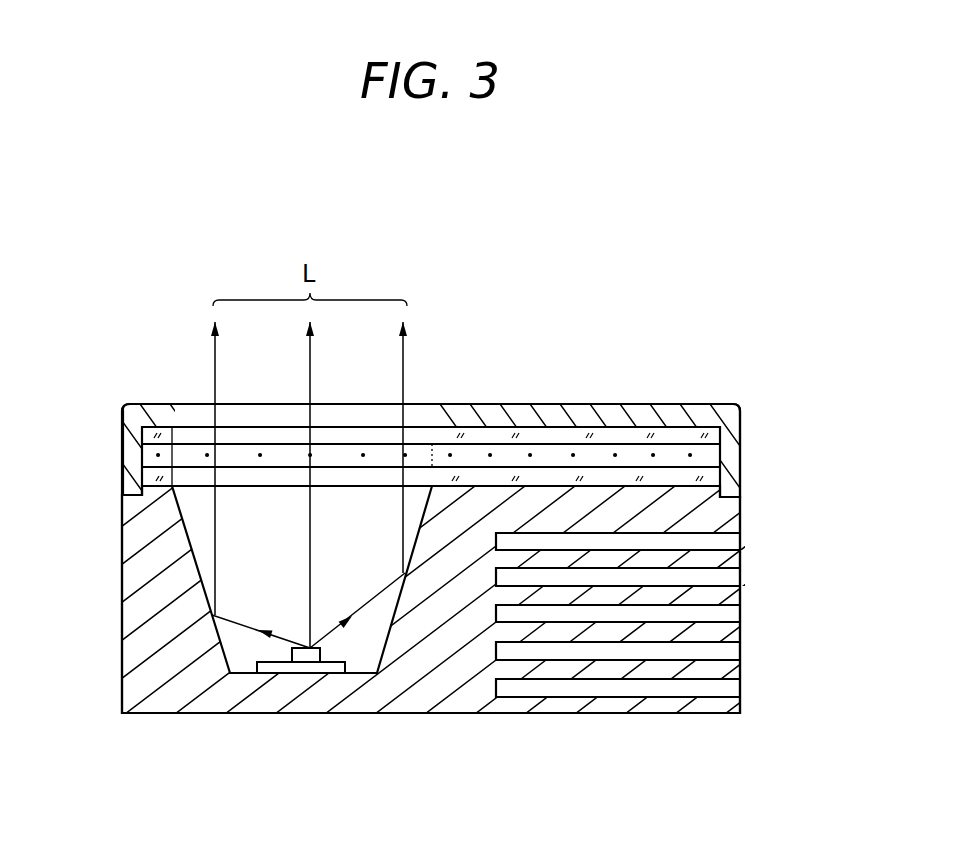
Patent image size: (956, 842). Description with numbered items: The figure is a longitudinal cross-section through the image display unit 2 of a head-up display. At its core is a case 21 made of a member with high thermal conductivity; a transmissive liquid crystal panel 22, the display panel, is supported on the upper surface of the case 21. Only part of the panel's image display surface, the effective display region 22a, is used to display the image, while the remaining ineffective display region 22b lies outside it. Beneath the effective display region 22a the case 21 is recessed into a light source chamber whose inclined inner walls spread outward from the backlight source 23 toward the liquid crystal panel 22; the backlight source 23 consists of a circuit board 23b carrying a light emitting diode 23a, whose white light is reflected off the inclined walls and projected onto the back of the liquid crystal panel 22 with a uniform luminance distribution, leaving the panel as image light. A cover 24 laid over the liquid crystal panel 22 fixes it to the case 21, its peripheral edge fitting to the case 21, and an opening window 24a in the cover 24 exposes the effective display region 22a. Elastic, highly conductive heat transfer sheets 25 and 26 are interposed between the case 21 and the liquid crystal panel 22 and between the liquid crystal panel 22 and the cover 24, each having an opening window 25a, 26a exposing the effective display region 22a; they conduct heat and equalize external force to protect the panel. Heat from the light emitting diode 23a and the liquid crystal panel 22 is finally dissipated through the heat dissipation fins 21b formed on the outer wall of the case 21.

The image display unit 2 is at (718, 401).
The case 21 is at (457, 422).
The heat dissipation fins 21b is at (762, 660).
The liquid crystal panel 22 is at (471, 413).
The effective display region 22a is at (252, 452).
The ineffective display region 22b is at (553, 458).
The backlight source 23 is at (256, 715).
The light emitting diode 23a is at (307, 654).
The circuit board 23b is at (323, 666).
The cover 24 is at (413, 428).
The opening window 24a is at (427, 412).
The heat transfer sheet 25 is at (429, 504).
The opening window 25a is at (180, 476).
The heat transfer sheet 26 is at (466, 398).
The opening window 26a is at (177, 434).